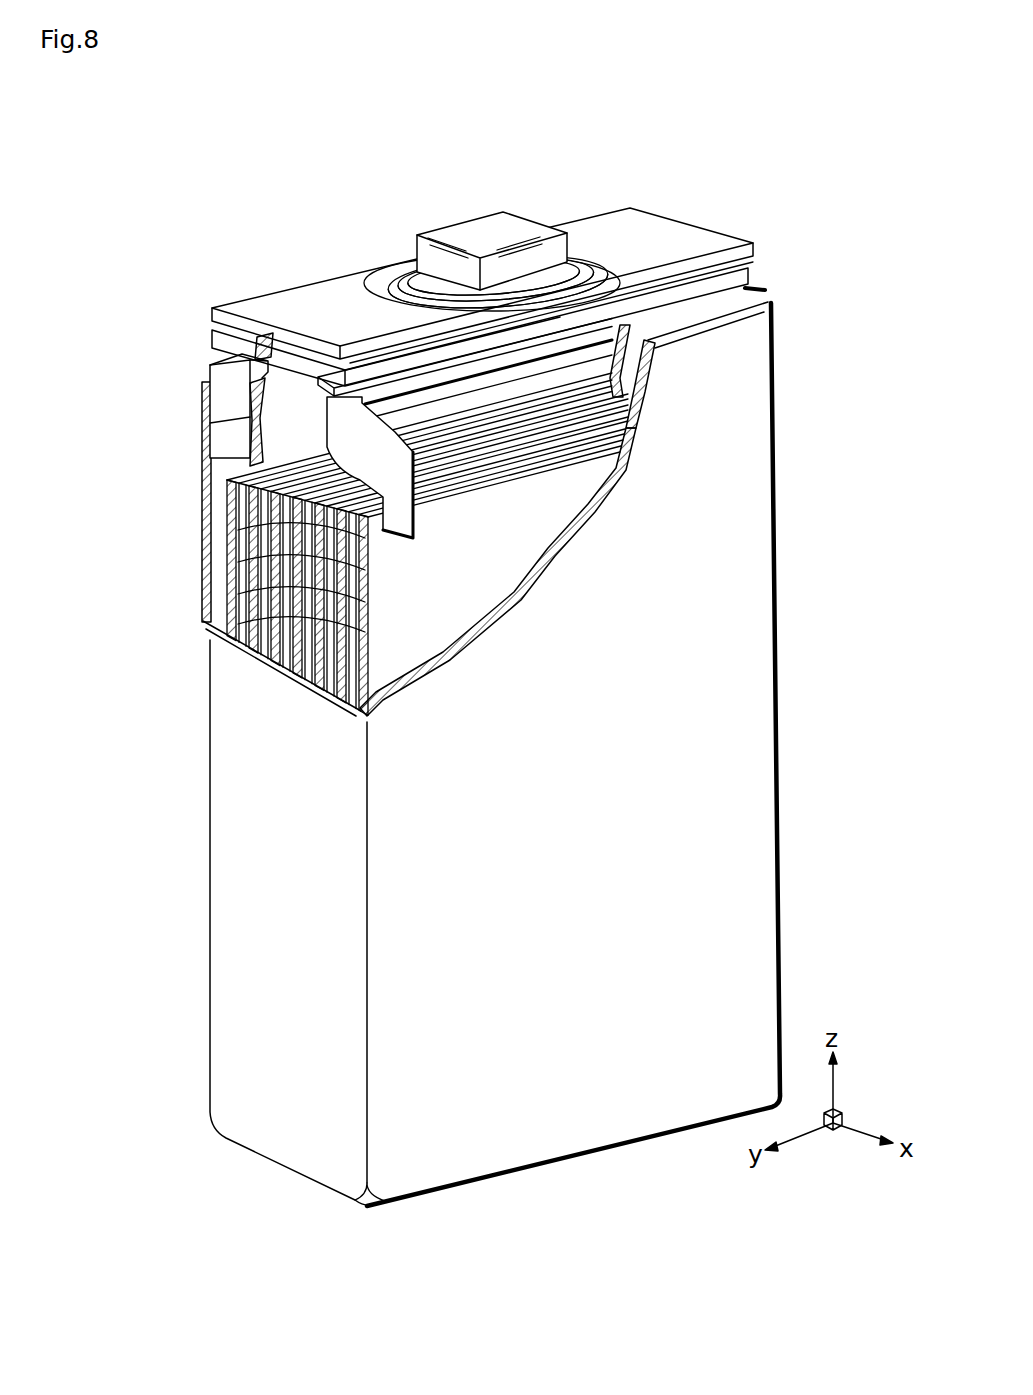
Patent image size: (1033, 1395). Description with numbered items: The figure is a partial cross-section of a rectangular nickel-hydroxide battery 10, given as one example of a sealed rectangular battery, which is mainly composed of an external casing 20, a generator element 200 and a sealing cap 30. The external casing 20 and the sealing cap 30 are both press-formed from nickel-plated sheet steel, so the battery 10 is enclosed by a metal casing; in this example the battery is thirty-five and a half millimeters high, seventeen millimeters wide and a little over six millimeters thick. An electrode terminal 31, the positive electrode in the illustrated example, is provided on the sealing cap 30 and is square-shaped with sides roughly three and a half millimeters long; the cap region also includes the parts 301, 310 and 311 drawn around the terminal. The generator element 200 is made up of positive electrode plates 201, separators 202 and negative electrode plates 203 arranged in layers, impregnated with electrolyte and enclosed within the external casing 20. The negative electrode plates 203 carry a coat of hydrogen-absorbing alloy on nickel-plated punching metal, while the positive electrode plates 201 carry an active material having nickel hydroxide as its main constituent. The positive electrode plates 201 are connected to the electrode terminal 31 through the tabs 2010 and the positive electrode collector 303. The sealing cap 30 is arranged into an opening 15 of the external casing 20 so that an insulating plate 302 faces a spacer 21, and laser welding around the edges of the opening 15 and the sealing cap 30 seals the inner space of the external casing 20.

The nickel-hydroxide battery 10 is at (473, 661).
The opening 15 is at (770, 303).
The external casing 20 is at (781, 716).
The spacer 21 is at (228, 386).
The sealing cap 30 is at (530, 327).
The electrode terminal 31 is at (509, 215).
The generator element 200 is at (343, 527).
The positive electrode plates 201 is at (258, 540).
The separators 202 is at (212, 562).
The negative electrode plates 203 is at (212, 604).
The lid plate 301 is at (643, 230).
The insulating plate 302 is at (757, 272).
The positive electrode collector 303 is at (373, 378).
The valve cap 310 is at (507, 228).
The valve groove 311 is at (561, 226).
The tabs 2010 is at (169, 404).